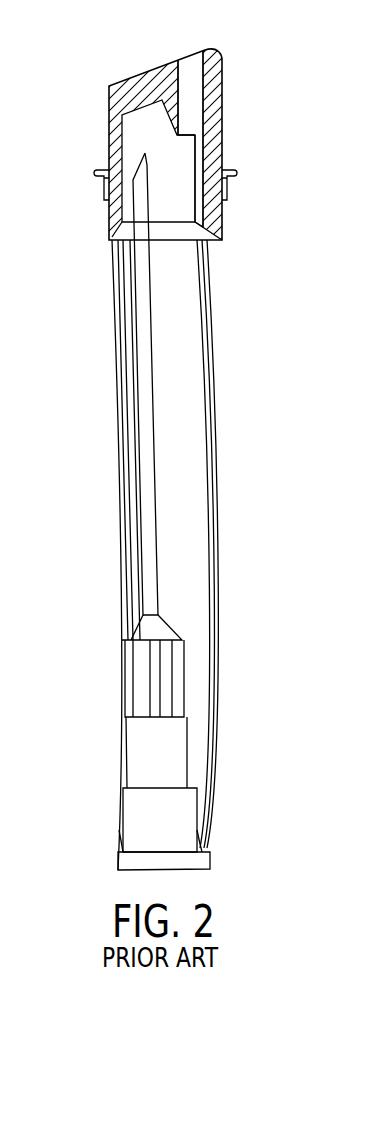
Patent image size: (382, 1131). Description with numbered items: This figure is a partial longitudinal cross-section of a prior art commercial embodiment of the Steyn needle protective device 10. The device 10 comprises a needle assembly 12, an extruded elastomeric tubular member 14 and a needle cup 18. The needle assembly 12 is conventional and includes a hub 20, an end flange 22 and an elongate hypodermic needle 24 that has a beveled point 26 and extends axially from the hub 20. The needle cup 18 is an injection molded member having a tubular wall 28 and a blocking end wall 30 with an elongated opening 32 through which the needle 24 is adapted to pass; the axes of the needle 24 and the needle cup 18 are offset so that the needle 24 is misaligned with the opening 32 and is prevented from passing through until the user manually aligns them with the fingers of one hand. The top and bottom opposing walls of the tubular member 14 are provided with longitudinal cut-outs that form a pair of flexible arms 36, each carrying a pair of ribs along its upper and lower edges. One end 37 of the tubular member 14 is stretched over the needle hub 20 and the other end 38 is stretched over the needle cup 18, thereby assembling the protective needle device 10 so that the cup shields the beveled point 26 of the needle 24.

The needle protective device 10 is at (259, 290).
The needle assembly 12 is at (184, 610).
The extruded elastomeric tubular member 14 is at (221, 435).
The needle cup 18 is at (86, 77).
The hub 20 is at (161, 745).
The end flange 22 is at (204, 860).
The elongate hypodermic needle 24 is at (158, 513).
The beveled point 26 is at (133, 165).
The tubular wall 28 is at (223, 115).
The blocking end wall 30 is at (143, 70).
The elongated opening 32 is at (188, 65).
The flexible arms 36 is at (178, 382).
The one end of the tubular member 37 is at (206, 835).
The other end of the tubular member 38 is at (228, 193).